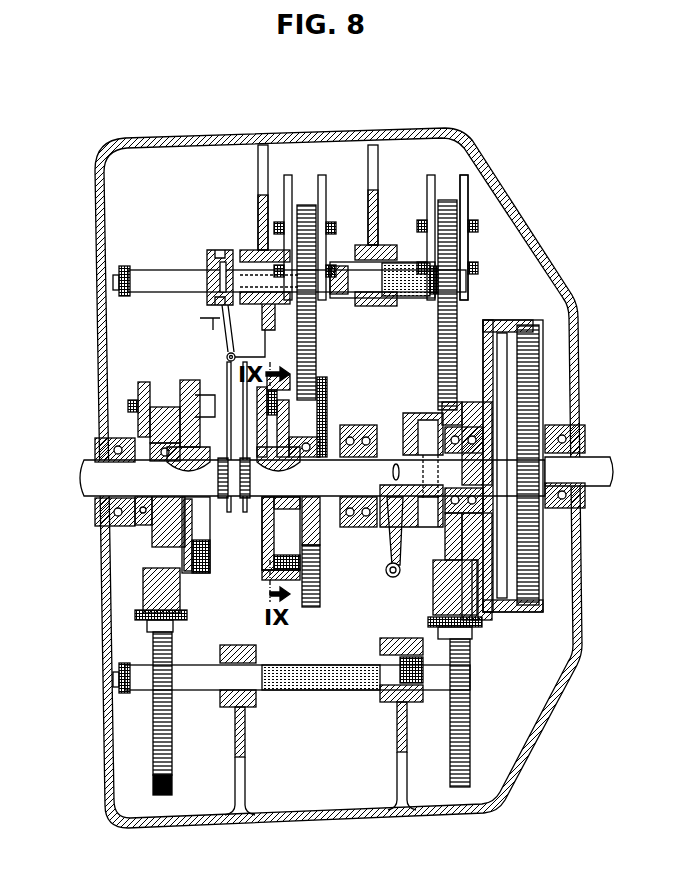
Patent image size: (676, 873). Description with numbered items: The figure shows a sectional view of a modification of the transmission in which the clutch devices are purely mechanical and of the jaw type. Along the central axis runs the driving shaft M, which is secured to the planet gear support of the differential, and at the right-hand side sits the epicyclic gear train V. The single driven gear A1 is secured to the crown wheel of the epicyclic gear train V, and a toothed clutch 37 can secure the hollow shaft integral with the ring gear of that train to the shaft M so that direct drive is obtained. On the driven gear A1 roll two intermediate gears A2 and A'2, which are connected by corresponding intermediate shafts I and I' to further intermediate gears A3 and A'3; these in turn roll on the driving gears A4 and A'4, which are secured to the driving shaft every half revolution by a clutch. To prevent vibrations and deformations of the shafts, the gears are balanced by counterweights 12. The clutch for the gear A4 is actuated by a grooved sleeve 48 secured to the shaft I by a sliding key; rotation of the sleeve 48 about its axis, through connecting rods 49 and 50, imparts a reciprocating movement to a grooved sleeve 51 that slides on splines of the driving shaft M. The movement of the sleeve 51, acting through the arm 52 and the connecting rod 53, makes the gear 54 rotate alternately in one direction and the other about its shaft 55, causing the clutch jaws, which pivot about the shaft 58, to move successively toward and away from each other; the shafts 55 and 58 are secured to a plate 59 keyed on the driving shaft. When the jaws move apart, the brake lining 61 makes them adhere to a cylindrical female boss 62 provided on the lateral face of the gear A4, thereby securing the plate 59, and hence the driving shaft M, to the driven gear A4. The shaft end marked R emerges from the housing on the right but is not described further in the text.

The grooved sleeve 48 is at (220, 252).
The intermediate gear A3 is at (303, 207).
The intermediate gear A2 is at (448, 202).
The counterweights 12 is at (472, 190).
The epicyclic gear train V is at (518, 322).
The intermediate shaft I is at (262, 263).
The connecting rod 49 is at (213, 323).
The connecting rod 50 is at (230, 372).
The cylindrical female boss 62 is at (278, 378).
The gear 54 is at (300, 387).
The driven gear A1 is at (445, 405).
The main shaft R is at (598, 463).
The shaft 55 is at (237, 410).
The connecting rod 53 is at (148, 428).
The arm 52 is at (167, 468).
The driving shaft M is at (165, 492).
The grooved sleeve 51 is at (220, 505).
The plate 59 is at (217, 522).
The driving gear A'4 is at (116, 618).
The intermediate gear A'3 is at (111, 716).
The shaft 58 is at (288, 540).
The brake lining 61 is at (282, 572).
The driving gear A4 is at (313, 550).
The toothed clutch 37 is at (423, 525).
The intermediate shaft I' is at (255, 703).
The intermediate gear A'2 is at (521, 673).